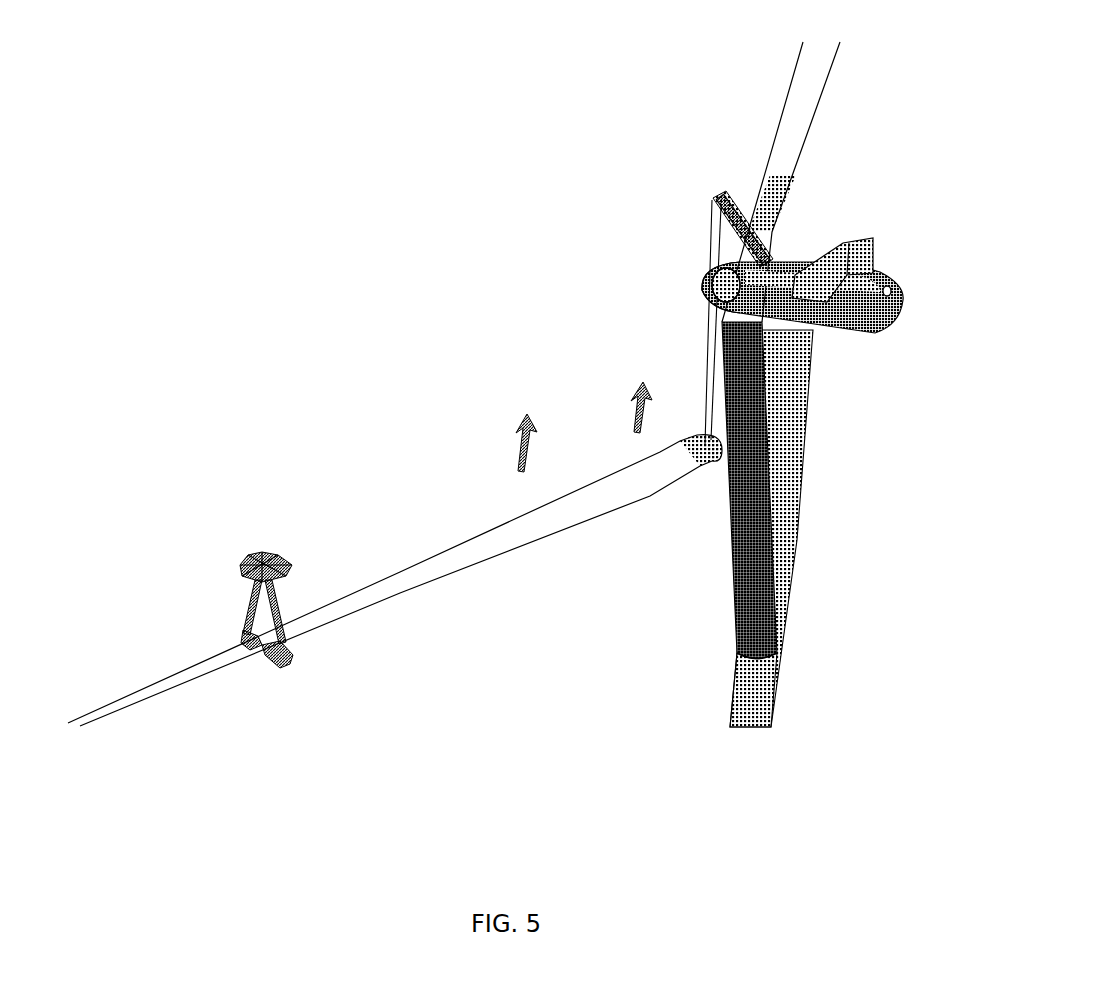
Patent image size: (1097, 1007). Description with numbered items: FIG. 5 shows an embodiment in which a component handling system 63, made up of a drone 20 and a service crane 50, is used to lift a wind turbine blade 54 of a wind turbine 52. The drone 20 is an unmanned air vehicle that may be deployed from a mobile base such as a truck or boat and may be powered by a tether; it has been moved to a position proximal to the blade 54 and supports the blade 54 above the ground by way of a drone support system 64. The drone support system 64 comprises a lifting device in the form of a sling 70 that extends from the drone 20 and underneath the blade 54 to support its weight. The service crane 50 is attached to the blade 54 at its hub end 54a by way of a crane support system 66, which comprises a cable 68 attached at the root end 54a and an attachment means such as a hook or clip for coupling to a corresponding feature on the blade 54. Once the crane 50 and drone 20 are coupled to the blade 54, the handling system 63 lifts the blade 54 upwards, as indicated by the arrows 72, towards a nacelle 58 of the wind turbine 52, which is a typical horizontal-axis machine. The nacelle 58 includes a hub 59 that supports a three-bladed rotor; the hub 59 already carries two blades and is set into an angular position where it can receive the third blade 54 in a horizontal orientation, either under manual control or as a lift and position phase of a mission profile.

The drone 20 is at (272, 545).
The service crane 50 is at (722, 190).
The wind turbine 52 is at (846, 477).
The wind turbine blade 54 is at (450, 562).
The hub end 54a is at (700, 452).
The nacelle 58 is at (878, 302).
The hub 59 is at (698, 272).
The component handling system 63 is at (526, 262).
The drone support system 64 is at (248, 620).
The crane support system 66 is at (686, 314).
The cable 68 is at (703, 375).
The sling 70 is at (287, 670).
The arrows 72 is at (628, 393).